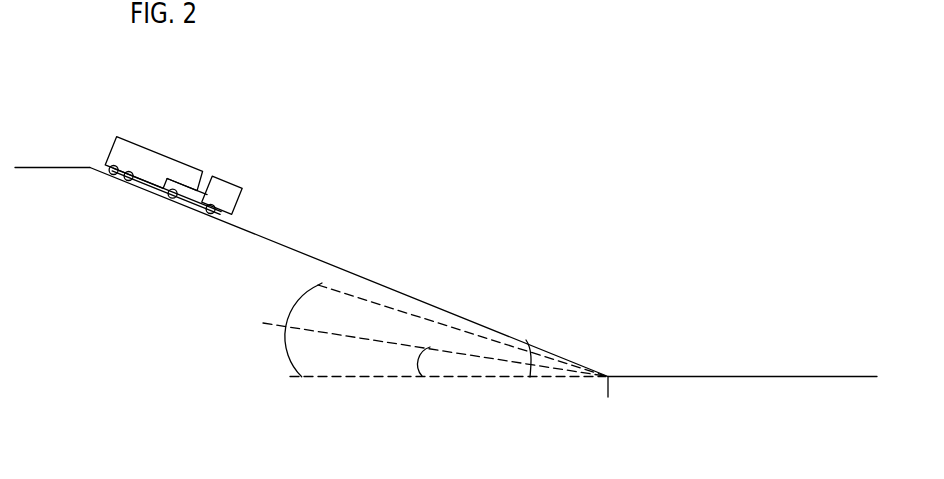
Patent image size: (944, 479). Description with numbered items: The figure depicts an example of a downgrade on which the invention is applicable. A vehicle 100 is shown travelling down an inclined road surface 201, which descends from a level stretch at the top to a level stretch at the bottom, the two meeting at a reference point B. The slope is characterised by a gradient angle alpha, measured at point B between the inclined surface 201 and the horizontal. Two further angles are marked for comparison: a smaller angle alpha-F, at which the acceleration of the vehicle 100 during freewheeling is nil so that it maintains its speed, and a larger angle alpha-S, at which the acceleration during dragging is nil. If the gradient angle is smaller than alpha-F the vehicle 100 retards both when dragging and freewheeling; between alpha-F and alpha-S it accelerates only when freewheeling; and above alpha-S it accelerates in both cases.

The vehicle (truck with trailer) 100 is at (234, 187).
The inclined road surface (slope) 201 is at (266, 240).
The reference point B at foot of slope B is at (612, 404).